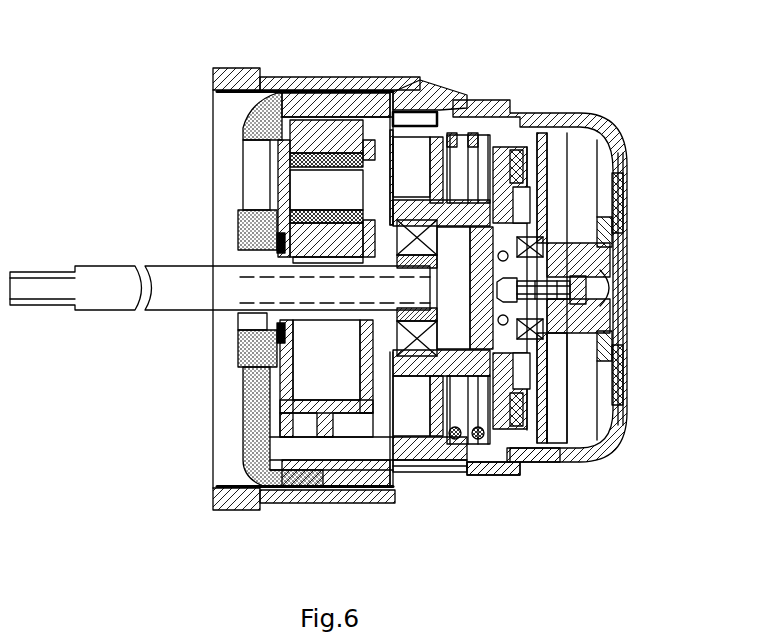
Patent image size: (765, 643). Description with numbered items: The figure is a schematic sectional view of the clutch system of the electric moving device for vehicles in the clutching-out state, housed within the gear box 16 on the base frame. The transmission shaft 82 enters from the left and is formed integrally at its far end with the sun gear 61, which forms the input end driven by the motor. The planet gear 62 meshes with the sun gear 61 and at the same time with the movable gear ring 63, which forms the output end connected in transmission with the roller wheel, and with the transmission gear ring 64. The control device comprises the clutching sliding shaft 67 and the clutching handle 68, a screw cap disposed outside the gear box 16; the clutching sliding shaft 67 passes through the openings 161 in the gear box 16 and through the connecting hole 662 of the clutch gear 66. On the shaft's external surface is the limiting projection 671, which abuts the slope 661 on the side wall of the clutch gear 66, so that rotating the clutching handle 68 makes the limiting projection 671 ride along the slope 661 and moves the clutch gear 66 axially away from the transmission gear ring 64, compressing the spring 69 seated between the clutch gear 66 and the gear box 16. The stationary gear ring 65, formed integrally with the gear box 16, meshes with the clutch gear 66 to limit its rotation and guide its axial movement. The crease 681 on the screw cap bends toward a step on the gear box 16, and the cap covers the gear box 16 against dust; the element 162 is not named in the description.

The gear box 16 is at (213, 493).
The openings 161 is at (567, 393).
The frame bottom plate 162 is at (465, 478).
The sun gear 61 is at (258, 350).
The planet gear 62 is at (320, 140).
The movable gear ring 63 is at (248, 123).
The transmission gear ring 64 is at (365, 100).
The stationary gear ring 65 is at (470, 100).
The clutch gear 66 is at (455, 125).
The slope 661 is at (495, 140).
The connecting hole 662 is at (535, 150).
The clutching sliding shaft 67 is at (510, 285).
The limiting projection 671 is at (462, 155).
The clutching handle 68 is at (620, 240).
The crease 681 is at (493, 473).
The spring 69 is at (460, 432).
The transmission shaft 82 is at (185, 290).